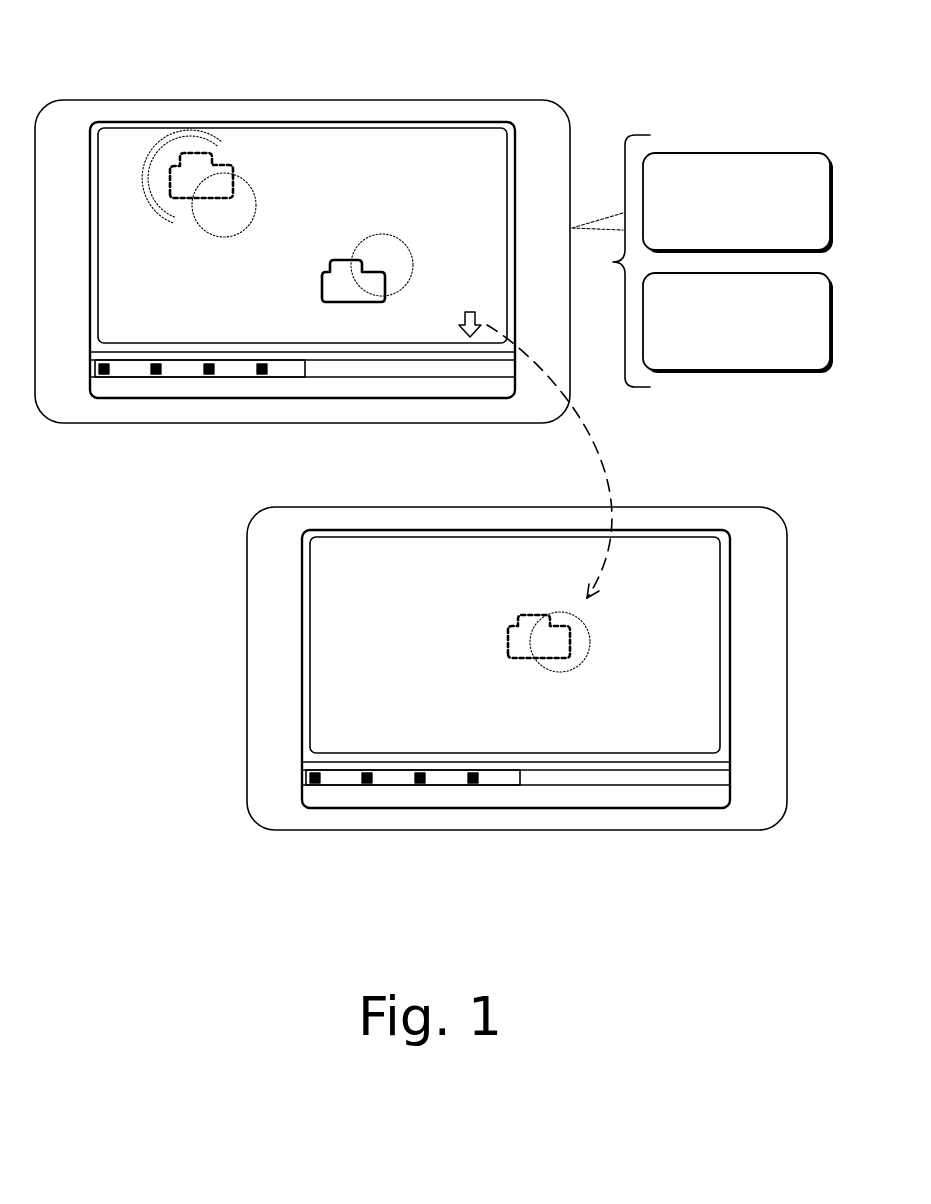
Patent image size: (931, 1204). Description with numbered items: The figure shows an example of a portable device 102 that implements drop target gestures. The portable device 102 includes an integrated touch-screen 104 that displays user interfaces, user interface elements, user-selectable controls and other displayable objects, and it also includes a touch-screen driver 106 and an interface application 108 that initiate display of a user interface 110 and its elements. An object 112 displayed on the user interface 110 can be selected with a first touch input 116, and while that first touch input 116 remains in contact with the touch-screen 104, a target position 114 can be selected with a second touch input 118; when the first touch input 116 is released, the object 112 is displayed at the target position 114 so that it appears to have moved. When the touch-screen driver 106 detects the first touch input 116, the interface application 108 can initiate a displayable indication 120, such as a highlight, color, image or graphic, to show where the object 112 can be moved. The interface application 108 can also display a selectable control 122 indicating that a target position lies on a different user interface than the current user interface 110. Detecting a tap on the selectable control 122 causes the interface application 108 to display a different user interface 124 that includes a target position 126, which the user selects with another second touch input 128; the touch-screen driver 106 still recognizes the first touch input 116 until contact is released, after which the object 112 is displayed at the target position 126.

The portable device 102 is at (207, 100).
The touch-screen 104 is at (358, 121).
The touch-screen driver 106 is at (738, 203).
The interface application 108 is at (738, 323).
The user interface 110 is at (420, 128).
The object 112 is at (353, 296).
The target position 114 is at (220, 160).
The first touch input 116 is at (392, 238).
The second touch input 118 is at (213, 230).
The displayable indication 120 is at (163, 140).
The selectable control 122 is at (530, 440).
The different user interface 124 is at (638, 536).
The target position 126 is at (512, 622).
The second touch input 128 is at (580, 666).